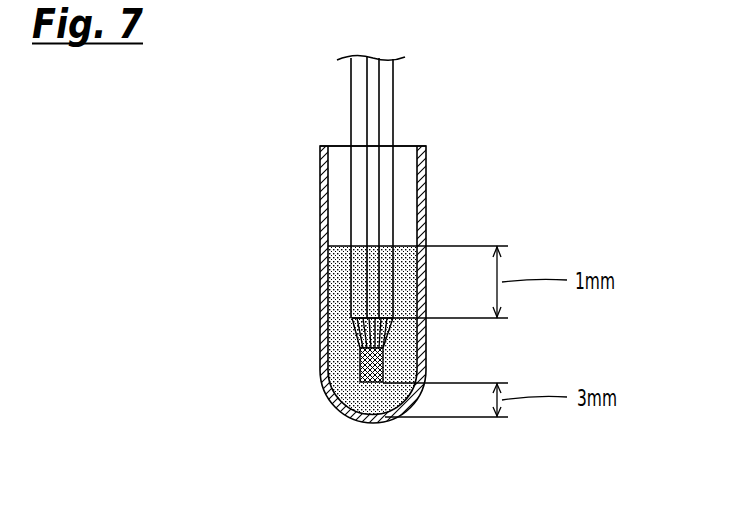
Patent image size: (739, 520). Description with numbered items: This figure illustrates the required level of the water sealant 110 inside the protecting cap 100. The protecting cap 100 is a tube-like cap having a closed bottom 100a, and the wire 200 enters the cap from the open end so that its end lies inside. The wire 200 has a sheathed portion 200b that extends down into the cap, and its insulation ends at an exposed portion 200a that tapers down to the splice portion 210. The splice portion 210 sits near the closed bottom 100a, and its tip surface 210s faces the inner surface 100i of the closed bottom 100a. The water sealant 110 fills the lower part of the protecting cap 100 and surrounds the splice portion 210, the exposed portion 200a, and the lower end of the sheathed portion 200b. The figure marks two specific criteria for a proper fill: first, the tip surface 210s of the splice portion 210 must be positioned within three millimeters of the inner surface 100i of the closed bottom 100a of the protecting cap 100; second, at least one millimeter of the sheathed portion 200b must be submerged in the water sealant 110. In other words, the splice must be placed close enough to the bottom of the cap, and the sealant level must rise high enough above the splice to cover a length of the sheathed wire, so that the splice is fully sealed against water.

The protecting cap 100 is at (320, 192).
The closed bottom 100a is at (372, 424).
The inner surface 100i is at (383, 402).
The water sealant 110 is at (336, 308).
The lead wire / cable 200 is at (400, 97).
The exposed end portion of lead wire 200a is at (355, 331).
The sheathed portion 200b is at (357, 268).
The splice portion 210 is at (360, 362).
The tip surface 210s is at (343, 413).